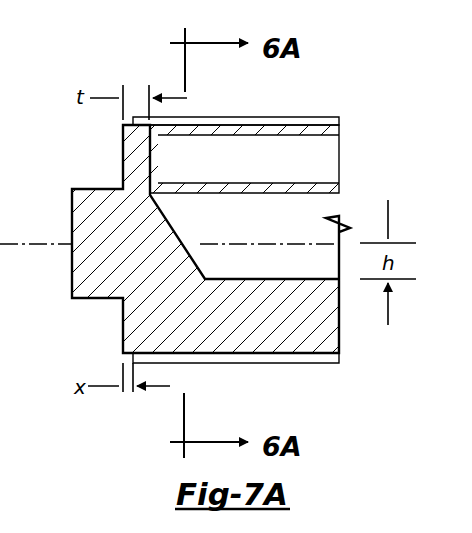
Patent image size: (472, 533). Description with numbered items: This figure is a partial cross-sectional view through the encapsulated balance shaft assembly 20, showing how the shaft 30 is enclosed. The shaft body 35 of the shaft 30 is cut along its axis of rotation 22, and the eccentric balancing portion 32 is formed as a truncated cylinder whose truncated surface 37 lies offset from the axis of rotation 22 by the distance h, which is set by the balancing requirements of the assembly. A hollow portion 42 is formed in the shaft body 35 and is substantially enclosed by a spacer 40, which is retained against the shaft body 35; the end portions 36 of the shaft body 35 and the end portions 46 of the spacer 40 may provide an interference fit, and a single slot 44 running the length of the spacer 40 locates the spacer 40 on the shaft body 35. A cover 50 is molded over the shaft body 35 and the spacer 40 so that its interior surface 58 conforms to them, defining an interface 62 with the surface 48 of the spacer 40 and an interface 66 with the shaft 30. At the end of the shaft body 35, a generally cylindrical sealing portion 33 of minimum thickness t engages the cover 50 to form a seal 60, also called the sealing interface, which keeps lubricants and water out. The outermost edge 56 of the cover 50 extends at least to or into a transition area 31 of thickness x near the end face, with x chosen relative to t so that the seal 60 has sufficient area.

The shaft assembly 20 is at (330, 70).
The axis of rotation 22 is at (34, 243).
The shaft 30 is at (58, 278).
The transition area 31 is at (128, 345).
The balancing portion 32 is at (344, 337).
The sealing portion 33 is at (127, 127).
The shaft body 35 is at (124, 356).
The end portion 36 is at (153, 170).
The truncated surface 37 is at (256, 278).
The spacer 40 is at (308, 198).
The hollow portion 42 is at (262, 169).
The slot 44 is at (340, 190).
The end portion 46 is at (146, 152).
The surface 48 is at (340, 133).
The cover 50 is at (334, 110).
The outermost edge 56 is at (134, 362).
The interior surface 58 is at (262, 125).
The seal 60 is at (141, 120).
The interface 62 is at (340, 127).
The interface 66 is at (285, 356).